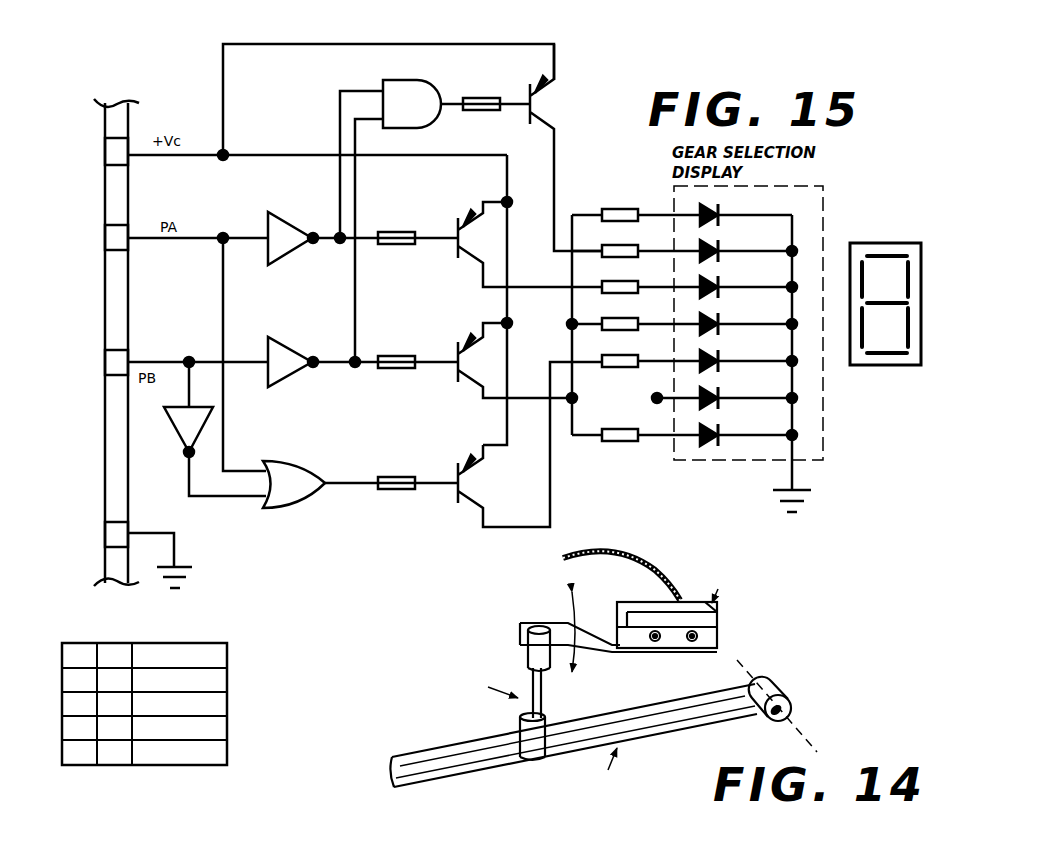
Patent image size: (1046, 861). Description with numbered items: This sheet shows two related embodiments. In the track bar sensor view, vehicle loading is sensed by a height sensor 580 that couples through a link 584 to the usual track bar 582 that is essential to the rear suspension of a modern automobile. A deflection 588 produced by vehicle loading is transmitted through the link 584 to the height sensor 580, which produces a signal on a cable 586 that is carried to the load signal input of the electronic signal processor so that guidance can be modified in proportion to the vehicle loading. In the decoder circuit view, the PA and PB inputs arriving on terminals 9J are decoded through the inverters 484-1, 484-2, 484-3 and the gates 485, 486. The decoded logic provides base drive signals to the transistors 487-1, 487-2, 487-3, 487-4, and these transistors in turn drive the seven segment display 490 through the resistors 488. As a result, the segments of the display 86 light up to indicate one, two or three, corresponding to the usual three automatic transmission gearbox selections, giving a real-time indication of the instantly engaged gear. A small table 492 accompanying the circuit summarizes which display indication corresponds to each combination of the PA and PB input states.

In FIG. 15, the terminals 9J is at (100, 153).
In FIG. 15, the inverter 484-1 is at (274, 225).
In FIG. 15, the inverter 484-2 is at (282, 355).
In FIG. 15, the inverter 484-3 is at (186, 424).
In FIG. 15, the gate 485 is at (415, 96).
In FIG. 15, the gate 486 is at (300, 478).
In FIG. 15, the transistor 487-1 is at (453, 227).
In FIG. 15, the transistor 487-2 is at (556, 105).
In FIG. 15, the transistor 487-3 is at (455, 350).
In FIG. 15, the transistor 487-4 is at (455, 472).
In FIG. 15, the resistors 488 is at (597, 198).
In FIG. 15, the seven segment display 490 is at (812, 248).
In FIG. 15, the display 86 is at (877, 378).
In FIG. 15, the truth table 492 is at (62, 652).
In FIG. 14, the height sensor 580 is at (718, 603).
In FIG. 14, the track bar 582 is at (488, 773).
In FIG. 14, the link 584 is at (528, 693).
In FIG. 14, the cable 586 is at (595, 560).
In FIG. 14, the deflection 588 is at (575, 655).